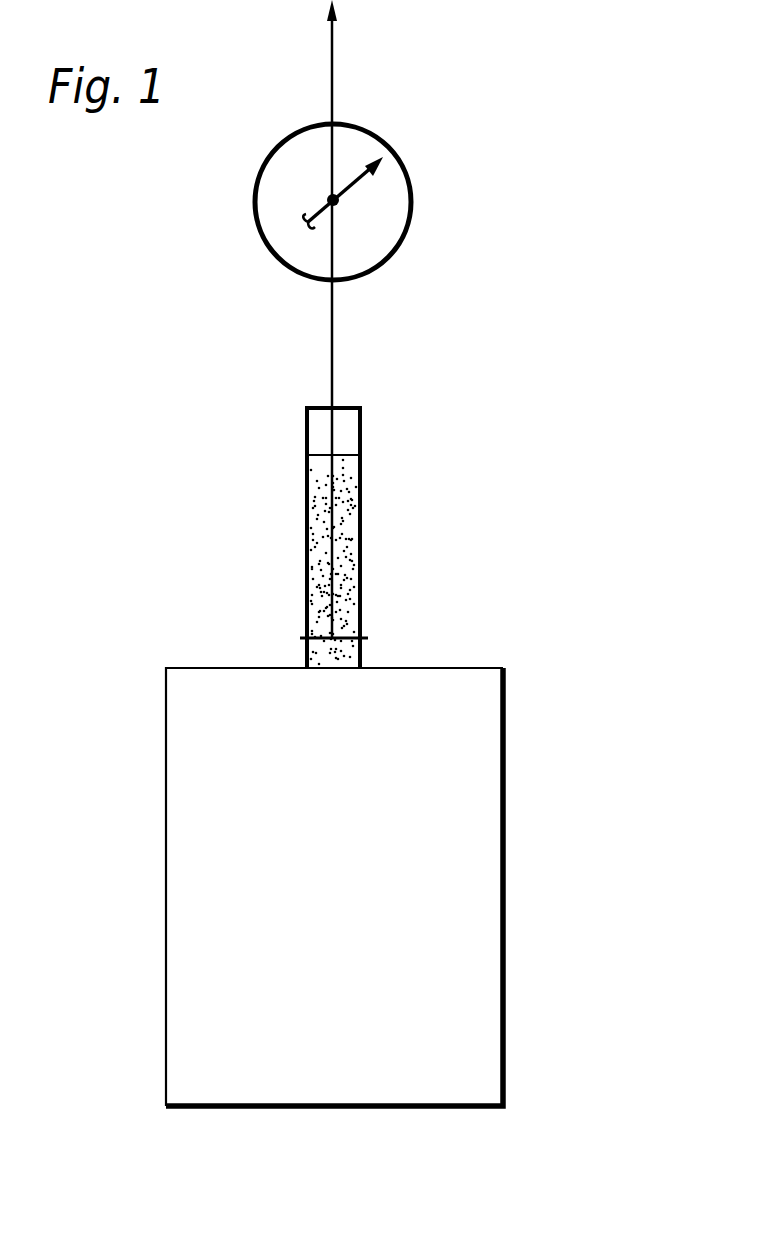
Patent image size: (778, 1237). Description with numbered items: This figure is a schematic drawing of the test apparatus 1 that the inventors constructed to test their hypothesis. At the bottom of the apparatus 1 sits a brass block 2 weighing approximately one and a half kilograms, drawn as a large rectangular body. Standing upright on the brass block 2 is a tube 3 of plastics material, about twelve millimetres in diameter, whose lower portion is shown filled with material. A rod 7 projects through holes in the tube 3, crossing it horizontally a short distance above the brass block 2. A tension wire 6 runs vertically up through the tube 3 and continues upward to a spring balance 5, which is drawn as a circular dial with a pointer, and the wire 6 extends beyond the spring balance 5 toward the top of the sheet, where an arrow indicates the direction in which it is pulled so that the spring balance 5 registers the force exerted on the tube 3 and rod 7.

The test apparatus 1 is at (548, 642).
The brass block 2 is at (198, 827).
The tube 3 is at (305, 437).
The spring balance 5 is at (412, 178).
The tension wire 6 is at (330, 347).
The rod 7 is at (347, 635).